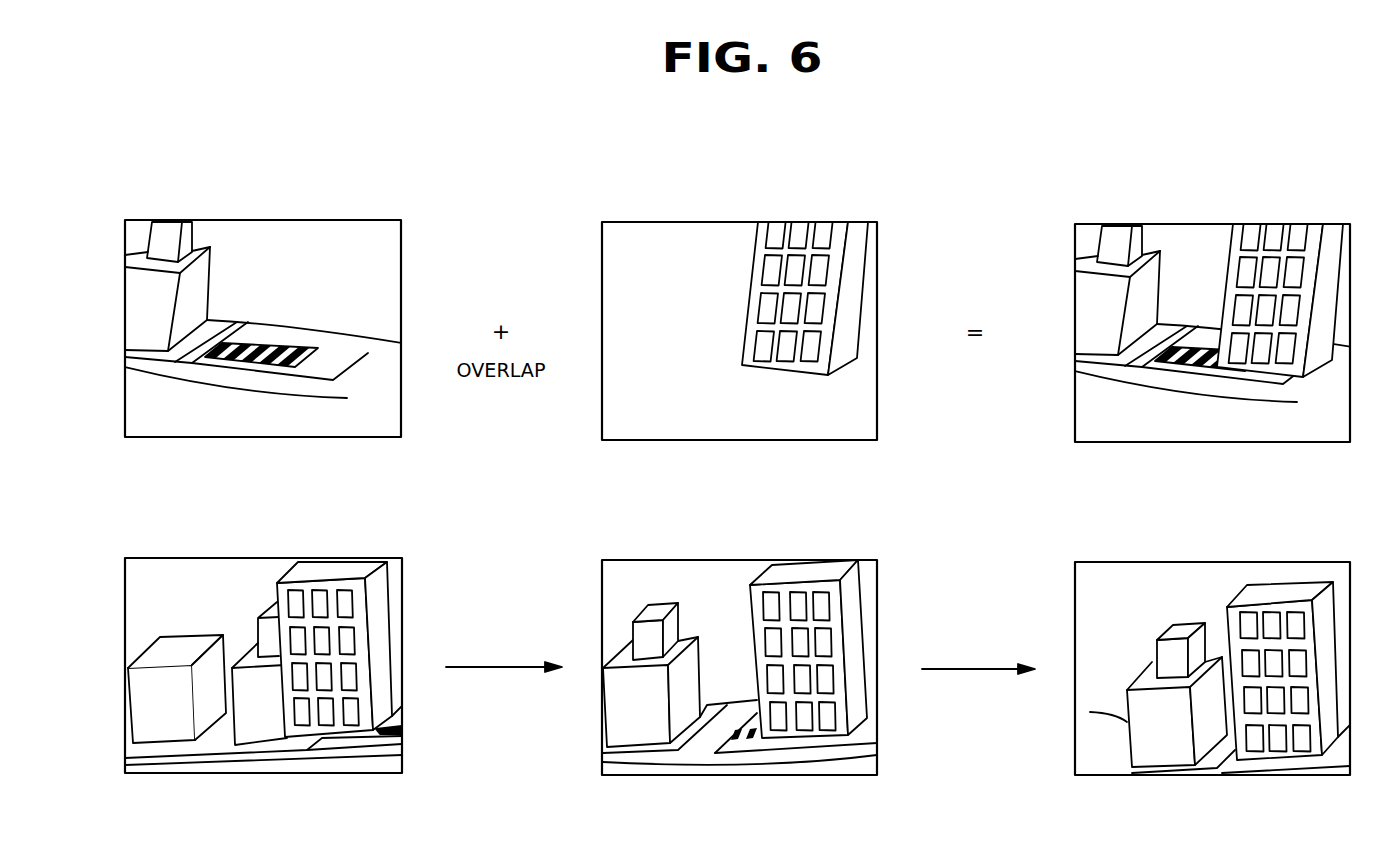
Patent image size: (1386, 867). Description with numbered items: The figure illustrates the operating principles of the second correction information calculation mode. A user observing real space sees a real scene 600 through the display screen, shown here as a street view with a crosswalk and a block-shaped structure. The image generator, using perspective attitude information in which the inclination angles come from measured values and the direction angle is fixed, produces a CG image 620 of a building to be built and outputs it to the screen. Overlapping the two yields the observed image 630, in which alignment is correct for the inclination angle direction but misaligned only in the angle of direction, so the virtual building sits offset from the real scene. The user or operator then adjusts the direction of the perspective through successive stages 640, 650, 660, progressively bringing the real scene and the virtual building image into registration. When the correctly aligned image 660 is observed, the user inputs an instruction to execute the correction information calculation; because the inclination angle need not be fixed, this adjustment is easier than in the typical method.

The real scene 600 is at (253, 220).
The CG image 620 is at (733, 222).
The observed image 630 is at (1208, 224).
The adjustment of perspective direction 640 is at (253, 558).
The adjustment of perspective direction 650 is at (733, 560).
The correctly aligned image 660 is at (1208, 562).